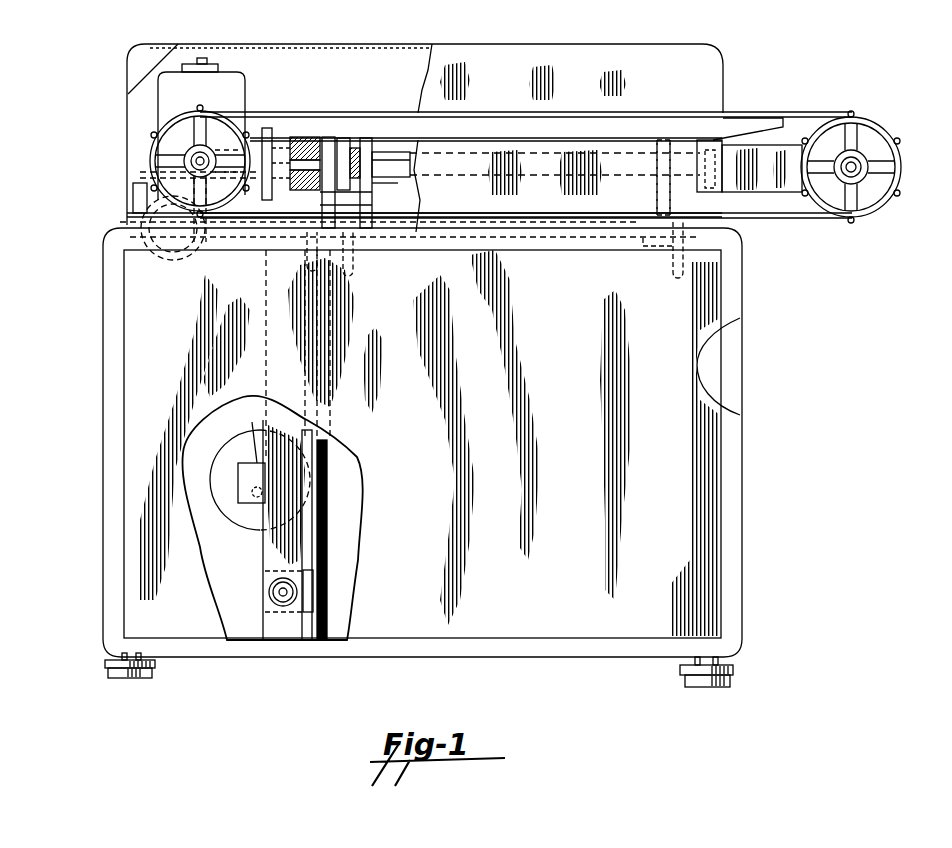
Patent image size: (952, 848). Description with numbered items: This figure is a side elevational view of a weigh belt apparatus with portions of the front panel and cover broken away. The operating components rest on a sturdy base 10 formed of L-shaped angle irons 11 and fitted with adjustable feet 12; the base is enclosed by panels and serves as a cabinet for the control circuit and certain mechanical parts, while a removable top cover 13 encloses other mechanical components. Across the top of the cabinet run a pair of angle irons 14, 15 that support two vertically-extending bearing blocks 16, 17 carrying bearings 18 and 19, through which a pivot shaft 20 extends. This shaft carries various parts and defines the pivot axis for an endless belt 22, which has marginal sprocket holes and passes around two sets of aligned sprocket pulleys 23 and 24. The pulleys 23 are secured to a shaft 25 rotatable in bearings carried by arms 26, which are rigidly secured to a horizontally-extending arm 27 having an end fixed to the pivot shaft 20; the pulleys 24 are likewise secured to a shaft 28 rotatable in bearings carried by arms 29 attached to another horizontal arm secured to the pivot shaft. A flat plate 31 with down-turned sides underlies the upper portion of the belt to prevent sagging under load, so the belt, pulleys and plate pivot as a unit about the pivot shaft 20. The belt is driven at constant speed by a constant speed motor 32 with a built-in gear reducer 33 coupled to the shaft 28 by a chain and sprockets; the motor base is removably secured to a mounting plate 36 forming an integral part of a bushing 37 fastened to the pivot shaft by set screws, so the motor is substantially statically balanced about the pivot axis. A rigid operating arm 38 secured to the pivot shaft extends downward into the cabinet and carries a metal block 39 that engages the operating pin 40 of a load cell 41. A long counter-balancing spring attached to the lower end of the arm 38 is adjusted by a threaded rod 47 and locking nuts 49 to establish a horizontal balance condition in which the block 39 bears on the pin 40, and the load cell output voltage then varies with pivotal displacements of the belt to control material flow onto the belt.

The base 10 is at (782, 452).
The L-shaped angle irons 11 is at (734, 302).
The adjustable feet 12 is at (150, 676).
The top cover 13 is at (762, 82).
The angle iron 14 is at (353, 253).
The angle iron 15 is at (673, 260).
The bearing block 16 is at (366, 204).
The bearing block 17 is at (660, 200).
The bearing 18 is at (396, 181).
The bearing 19 is at (657, 148).
The pivot shaft 20 is at (392, 150).
The endless belt 22 is at (828, 98).
The sprocket pulley 23 is at (872, 128).
The sprocket pulley 24 is at (183, 163).
The shaft 25 is at (858, 173).
The arm 26 is at (768, 182).
The horizontally-extending arm 27 is at (697, 148).
The shaft 28 is at (193, 158).
The arm 29 is at (218, 135).
The flat plate 31 is at (363, 126).
The constant speed motor 32 is at (232, 72).
The gear reducer 33 is at (133, 197).
The mounting plate 36 is at (272, 192).
The bushing 37 is at (280, 137).
The operating arm 38 is at (328, 452).
The metal block 39 is at (242, 435).
The operating pin 40 is at (252, 490).
The load cell 41 is at (248, 515).
The threaded rod 47 is at (275, 595).
The locking nuts 49 is at (272, 583).